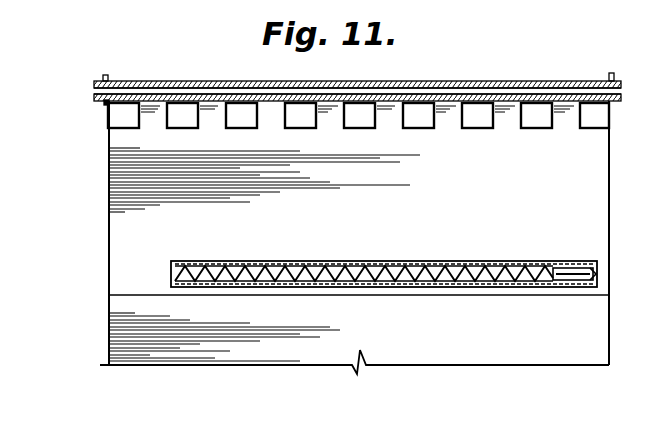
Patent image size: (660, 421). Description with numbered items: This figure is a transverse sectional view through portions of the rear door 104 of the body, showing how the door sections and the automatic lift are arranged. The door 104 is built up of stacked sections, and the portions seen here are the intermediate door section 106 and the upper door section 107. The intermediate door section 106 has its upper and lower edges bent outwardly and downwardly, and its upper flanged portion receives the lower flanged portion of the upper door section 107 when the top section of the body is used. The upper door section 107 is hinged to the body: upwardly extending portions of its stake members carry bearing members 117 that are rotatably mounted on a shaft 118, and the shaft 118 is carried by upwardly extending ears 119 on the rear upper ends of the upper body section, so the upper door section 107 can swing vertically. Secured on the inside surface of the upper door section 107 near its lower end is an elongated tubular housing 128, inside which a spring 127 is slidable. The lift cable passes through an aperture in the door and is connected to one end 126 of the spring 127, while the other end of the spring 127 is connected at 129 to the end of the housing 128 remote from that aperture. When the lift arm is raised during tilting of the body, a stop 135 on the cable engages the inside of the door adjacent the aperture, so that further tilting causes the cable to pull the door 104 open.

The door 104 is at (118, 223).
The intermediate door section 106 is at (118, 329).
The upper door section 107 is at (108, 176).
The bearing members 117 is at (112, 86).
The shaft 118 is at (150, 102).
The ears 119 is at (105, 102).
The end of spring 126 is at (553, 268).
The spring 127 is at (342, 265).
The elongated tubular housing 128 is at (244, 265).
The spring connection to housing 129 is at (169, 274).
The stop 135 is at (597, 273).